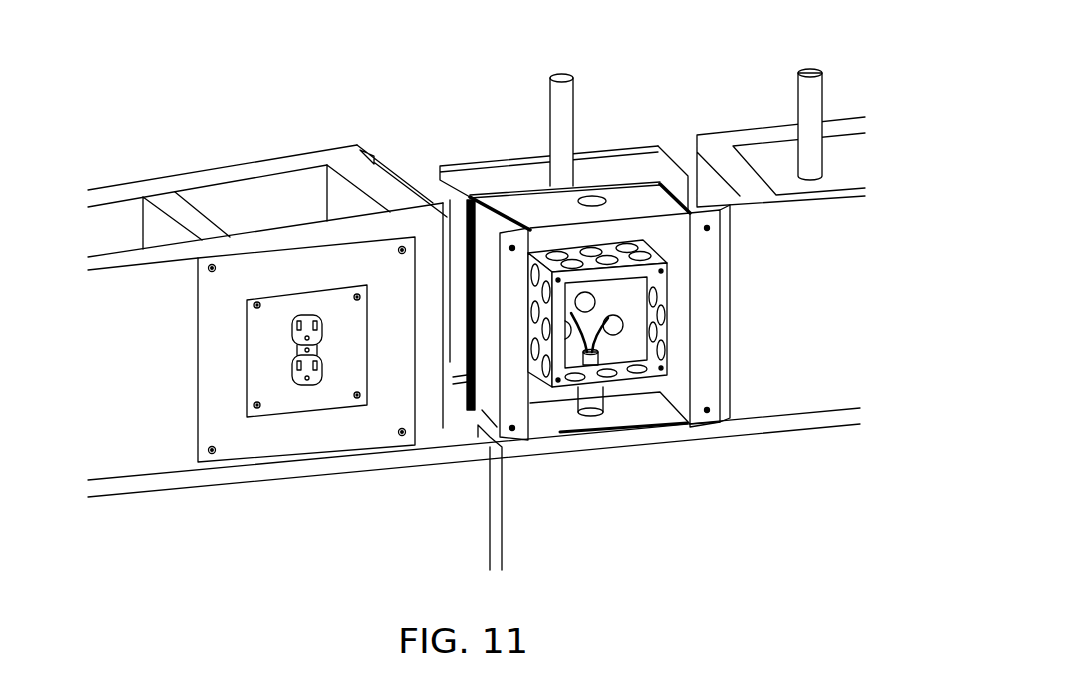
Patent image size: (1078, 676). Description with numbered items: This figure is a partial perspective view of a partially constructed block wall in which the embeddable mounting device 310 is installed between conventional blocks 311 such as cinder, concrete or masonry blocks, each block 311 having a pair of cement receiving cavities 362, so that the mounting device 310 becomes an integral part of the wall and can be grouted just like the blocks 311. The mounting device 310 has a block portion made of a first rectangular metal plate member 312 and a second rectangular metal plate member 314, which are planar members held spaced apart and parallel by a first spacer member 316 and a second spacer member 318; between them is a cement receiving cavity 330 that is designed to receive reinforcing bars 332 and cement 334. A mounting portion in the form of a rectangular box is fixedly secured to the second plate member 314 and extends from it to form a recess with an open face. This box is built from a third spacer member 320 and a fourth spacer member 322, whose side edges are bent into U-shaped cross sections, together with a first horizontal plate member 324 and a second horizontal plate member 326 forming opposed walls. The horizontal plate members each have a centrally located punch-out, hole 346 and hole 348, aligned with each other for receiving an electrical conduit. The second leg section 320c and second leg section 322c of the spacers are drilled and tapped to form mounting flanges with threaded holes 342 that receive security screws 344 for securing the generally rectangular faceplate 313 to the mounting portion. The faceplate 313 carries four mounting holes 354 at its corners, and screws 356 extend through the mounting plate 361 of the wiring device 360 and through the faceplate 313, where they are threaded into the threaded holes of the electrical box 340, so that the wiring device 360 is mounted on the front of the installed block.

The embeddable mounting device 310 is at (460, 126).
The blocks 311 is at (829, 388).
The first rectangular metal plate member 312 is at (452, 163).
The faceplate 313 is at (207, 348).
The second rectangular metal plate member 314 is at (473, 176).
The first spacer member 316 is at (458, 160).
The second spacer member 318 is at (646, 160).
The third spacer member 320 is at (441, 176).
The second leg section 320c is at (501, 395).
The fourth spacer member 322 is at (695, 197).
The second leg section 322c is at (727, 336).
The first horizontal plate member 324 is at (588, 192).
The second horizontal plate member 326 is at (552, 433).
The cement receiving cavity 330 is at (522, 167).
The reinforcing bars 332 is at (576, 92).
The cement 334 is at (843, 148).
The electrical box 340 is at (676, 284).
The threaded holes 342 is at (707, 229).
The security screws 344 is at (210, 270).
The hole 346 is at (608, 201).
The hole 348 is at (606, 413).
The mounting holes 354 is at (212, 271).
The screws 356 is at (256, 304).
The wiring device 360 is at (308, 385).
The mounting plate 361 is at (298, 300).
The cement receiving cavities 362 is at (124, 198).